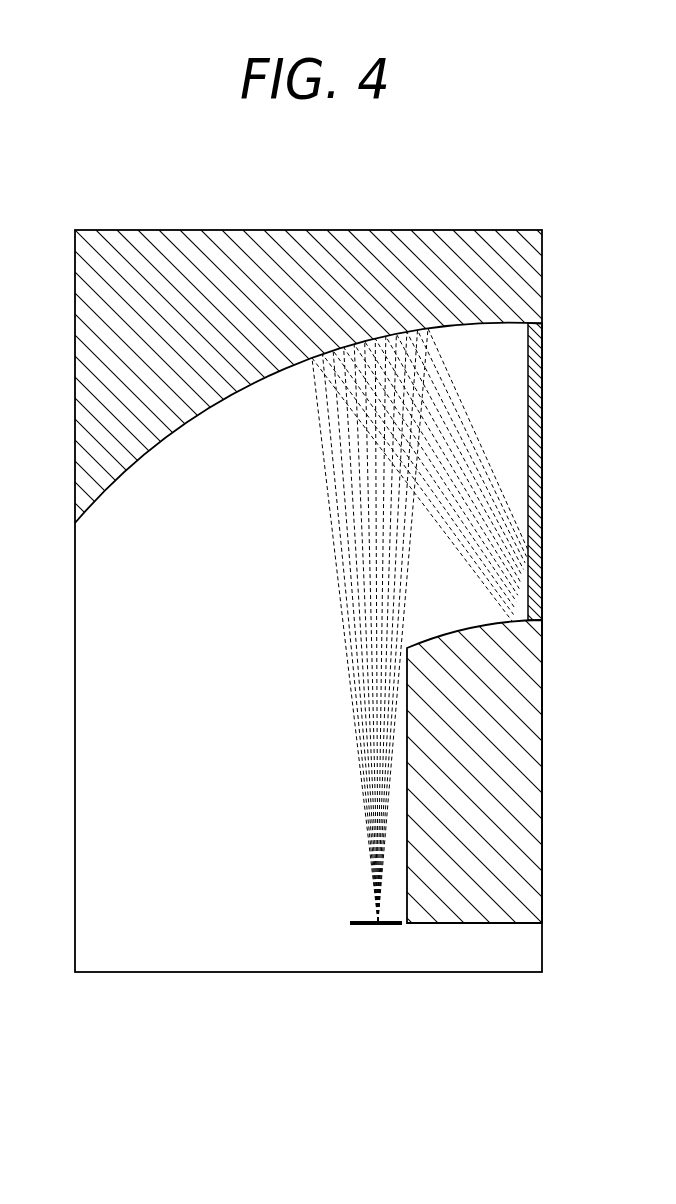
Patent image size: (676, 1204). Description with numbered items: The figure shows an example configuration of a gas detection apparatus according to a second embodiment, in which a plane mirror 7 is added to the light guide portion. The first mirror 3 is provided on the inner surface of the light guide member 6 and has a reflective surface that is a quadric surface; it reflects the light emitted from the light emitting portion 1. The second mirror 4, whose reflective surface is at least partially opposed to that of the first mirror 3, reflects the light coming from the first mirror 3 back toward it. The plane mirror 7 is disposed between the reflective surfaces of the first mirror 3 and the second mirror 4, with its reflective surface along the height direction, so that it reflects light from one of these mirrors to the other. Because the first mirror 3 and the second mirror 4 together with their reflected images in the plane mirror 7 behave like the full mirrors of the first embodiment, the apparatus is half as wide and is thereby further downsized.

The light emitting portion 1 is at (420, 676).
The first mirror 3 is at (230, 398).
The second mirror 4 is at (462, 627).
The light guide member 6 is at (290, 267).
The plane mirror 7 is at (528, 382).